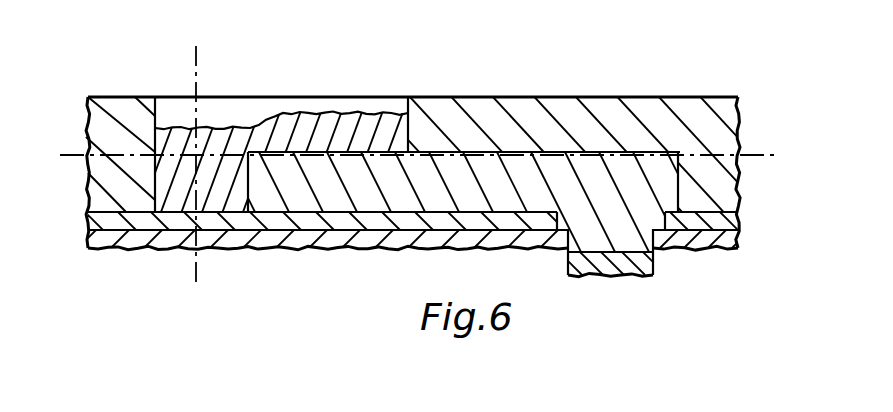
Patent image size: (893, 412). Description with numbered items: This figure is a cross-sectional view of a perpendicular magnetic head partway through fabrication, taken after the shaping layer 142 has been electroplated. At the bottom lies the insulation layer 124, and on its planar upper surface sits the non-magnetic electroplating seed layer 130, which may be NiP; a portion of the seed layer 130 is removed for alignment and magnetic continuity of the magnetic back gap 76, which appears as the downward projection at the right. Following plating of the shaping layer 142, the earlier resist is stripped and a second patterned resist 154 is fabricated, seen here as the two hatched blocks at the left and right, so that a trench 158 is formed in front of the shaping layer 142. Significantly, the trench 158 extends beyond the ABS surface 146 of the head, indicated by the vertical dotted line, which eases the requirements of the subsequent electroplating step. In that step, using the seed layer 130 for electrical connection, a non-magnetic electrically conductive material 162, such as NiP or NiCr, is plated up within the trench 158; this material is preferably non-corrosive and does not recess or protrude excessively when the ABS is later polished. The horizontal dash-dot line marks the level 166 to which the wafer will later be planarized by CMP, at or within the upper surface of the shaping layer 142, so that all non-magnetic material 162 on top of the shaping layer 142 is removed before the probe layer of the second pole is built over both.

The second patterned resist 154 is at (120, 113).
The ABS surface 146 is at (195, 78).
The trench 158 is at (217, 101).
The level 166 is at (772, 136).
The seed layer 130 is at (87, 217).
The insulation layer 124 is at (86, 240).
The non-magnetic, electrically conductive material 162 is at (213, 188).
The shaping layer 142 is at (357, 193).
The magnetic back gap 76 is at (609, 268).